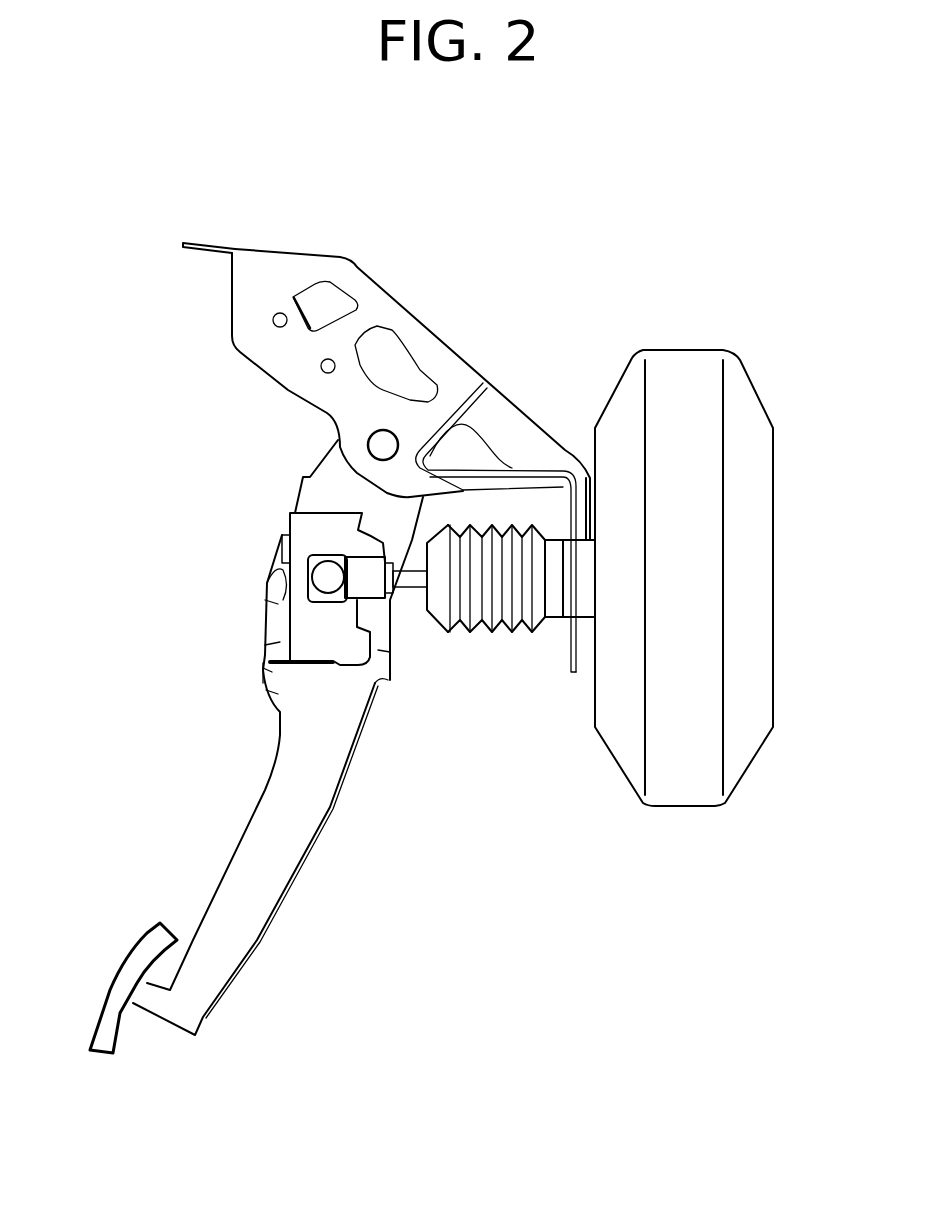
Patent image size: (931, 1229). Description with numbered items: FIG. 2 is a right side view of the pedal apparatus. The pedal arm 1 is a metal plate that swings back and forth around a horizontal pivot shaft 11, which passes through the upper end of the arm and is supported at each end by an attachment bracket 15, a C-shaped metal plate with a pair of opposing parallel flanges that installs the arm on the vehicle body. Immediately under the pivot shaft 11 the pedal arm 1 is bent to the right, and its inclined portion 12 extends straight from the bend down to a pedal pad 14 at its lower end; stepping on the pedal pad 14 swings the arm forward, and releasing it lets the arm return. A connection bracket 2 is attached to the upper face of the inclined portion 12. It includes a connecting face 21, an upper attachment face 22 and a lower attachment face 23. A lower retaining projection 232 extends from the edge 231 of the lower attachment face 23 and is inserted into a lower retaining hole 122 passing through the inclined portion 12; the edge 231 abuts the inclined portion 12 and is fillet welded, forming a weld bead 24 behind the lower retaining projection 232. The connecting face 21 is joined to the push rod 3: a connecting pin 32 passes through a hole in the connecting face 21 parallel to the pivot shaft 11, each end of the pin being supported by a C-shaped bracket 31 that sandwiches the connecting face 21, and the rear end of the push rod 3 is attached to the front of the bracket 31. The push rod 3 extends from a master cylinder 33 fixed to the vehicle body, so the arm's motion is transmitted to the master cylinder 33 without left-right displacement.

The pedal arm 1 is at (275, 767).
The connection bracket 2 is at (288, 628).
The push rod 3 is at (497, 530).
The pivot shaft 11 is at (370, 442).
The inclined portion 12 is at (275, 598).
The pedal pad 14 is at (133, 965).
The attachment bracket 15 is at (412, 322).
The connecting face 21 is at (272, 580).
The upper attachment face 22 is at (282, 538).
The lower attachment face 23 is at (270, 640).
The weld bead 24 is at (278, 690).
The bracket 31 is at (355, 565).
The connecting pin 32 is at (326, 590).
The master cylinder 33 is at (605, 730).
The lower retaining hole 122 is at (378, 650).
The edge of the lower attachment face 231 is at (265, 670).
The lower retaining projection 232 is at (377, 683).